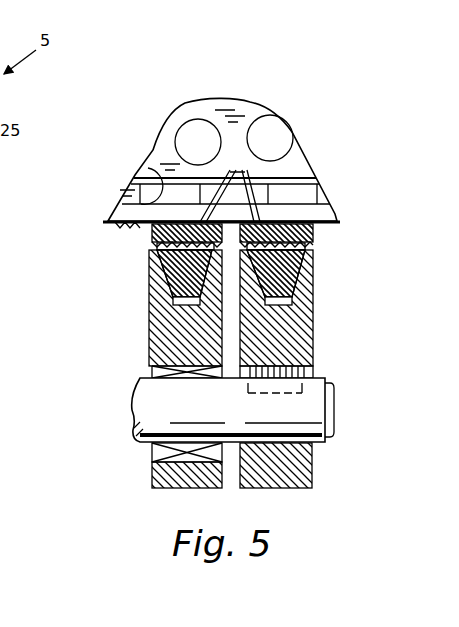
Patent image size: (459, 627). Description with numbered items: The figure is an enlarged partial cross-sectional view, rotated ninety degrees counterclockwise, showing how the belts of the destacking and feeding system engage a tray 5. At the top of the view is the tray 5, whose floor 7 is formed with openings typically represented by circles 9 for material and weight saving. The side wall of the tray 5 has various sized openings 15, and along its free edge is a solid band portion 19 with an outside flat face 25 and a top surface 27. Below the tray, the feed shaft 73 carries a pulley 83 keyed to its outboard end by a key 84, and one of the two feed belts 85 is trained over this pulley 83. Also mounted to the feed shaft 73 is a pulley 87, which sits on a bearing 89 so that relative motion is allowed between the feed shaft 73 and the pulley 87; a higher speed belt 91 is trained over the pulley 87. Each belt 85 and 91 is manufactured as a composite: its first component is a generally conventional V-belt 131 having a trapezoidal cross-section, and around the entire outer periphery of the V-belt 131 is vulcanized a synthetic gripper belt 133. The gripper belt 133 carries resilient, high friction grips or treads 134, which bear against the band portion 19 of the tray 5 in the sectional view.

The tray 5 is at (256, 86).
The circles 9 is at (202, 118).
The floor 7 is at (250, 117).
The openings 15 is at (147, 162).
The top surfaces 27 is at (118, 212).
The outside flat faces 25 is at (126, 230).
The band portion 19 is at (127, 250).
The grips or treads 134 is at (230, 188).
The gripper belt 133 is at (152, 244).
The V-belt 131 is at (178, 290).
The higher speed belts 91 is at (160, 297).
The feed belts 85 is at (300, 278).
The keys 84 is at (296, 368).
The feed shaft 73 is at (146, 398).
The bearings 89 is at (165, 455).
The pulleys 87 is at (165, 478).
The pulleys 83 is at (300, 472).